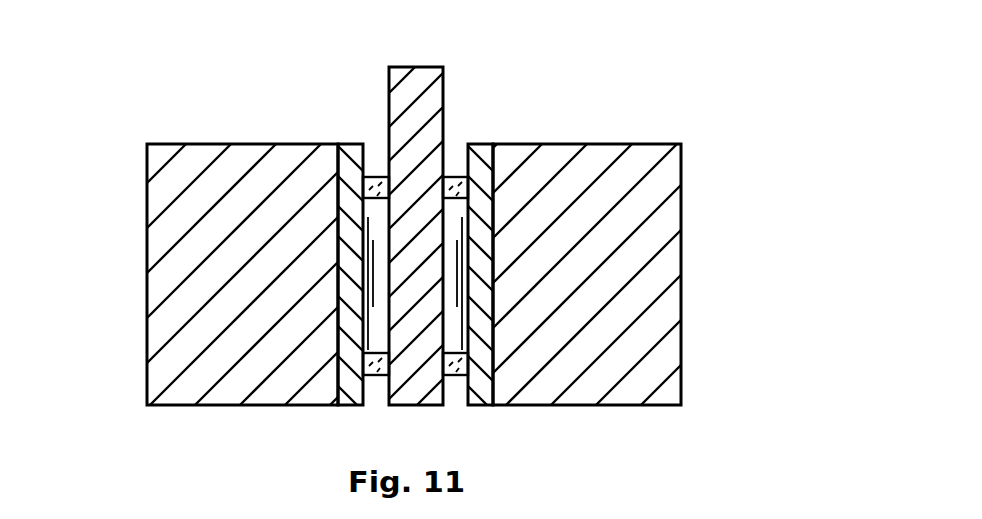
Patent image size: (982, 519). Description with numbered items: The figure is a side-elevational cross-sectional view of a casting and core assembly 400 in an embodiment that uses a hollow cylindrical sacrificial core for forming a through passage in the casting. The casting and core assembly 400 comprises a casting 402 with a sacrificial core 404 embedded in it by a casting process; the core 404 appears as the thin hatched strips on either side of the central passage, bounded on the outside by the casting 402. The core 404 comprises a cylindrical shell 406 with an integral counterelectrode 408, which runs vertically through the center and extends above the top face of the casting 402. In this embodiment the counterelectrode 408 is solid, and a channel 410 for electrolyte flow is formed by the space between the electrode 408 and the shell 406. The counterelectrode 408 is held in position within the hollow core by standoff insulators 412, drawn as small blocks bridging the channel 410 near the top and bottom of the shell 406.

The casting and core assembly 400 is at (772, 288).
The casting 402 is at (682, 169).
The sacrificial core 404 is at (495, 166).
The cylindrical shell 406 is at (348, 207).
The counterelectrode 408 is at (407, 66).
The channel 410 is at (456, 160).
The standoff insulators 412 is at (350, 245).